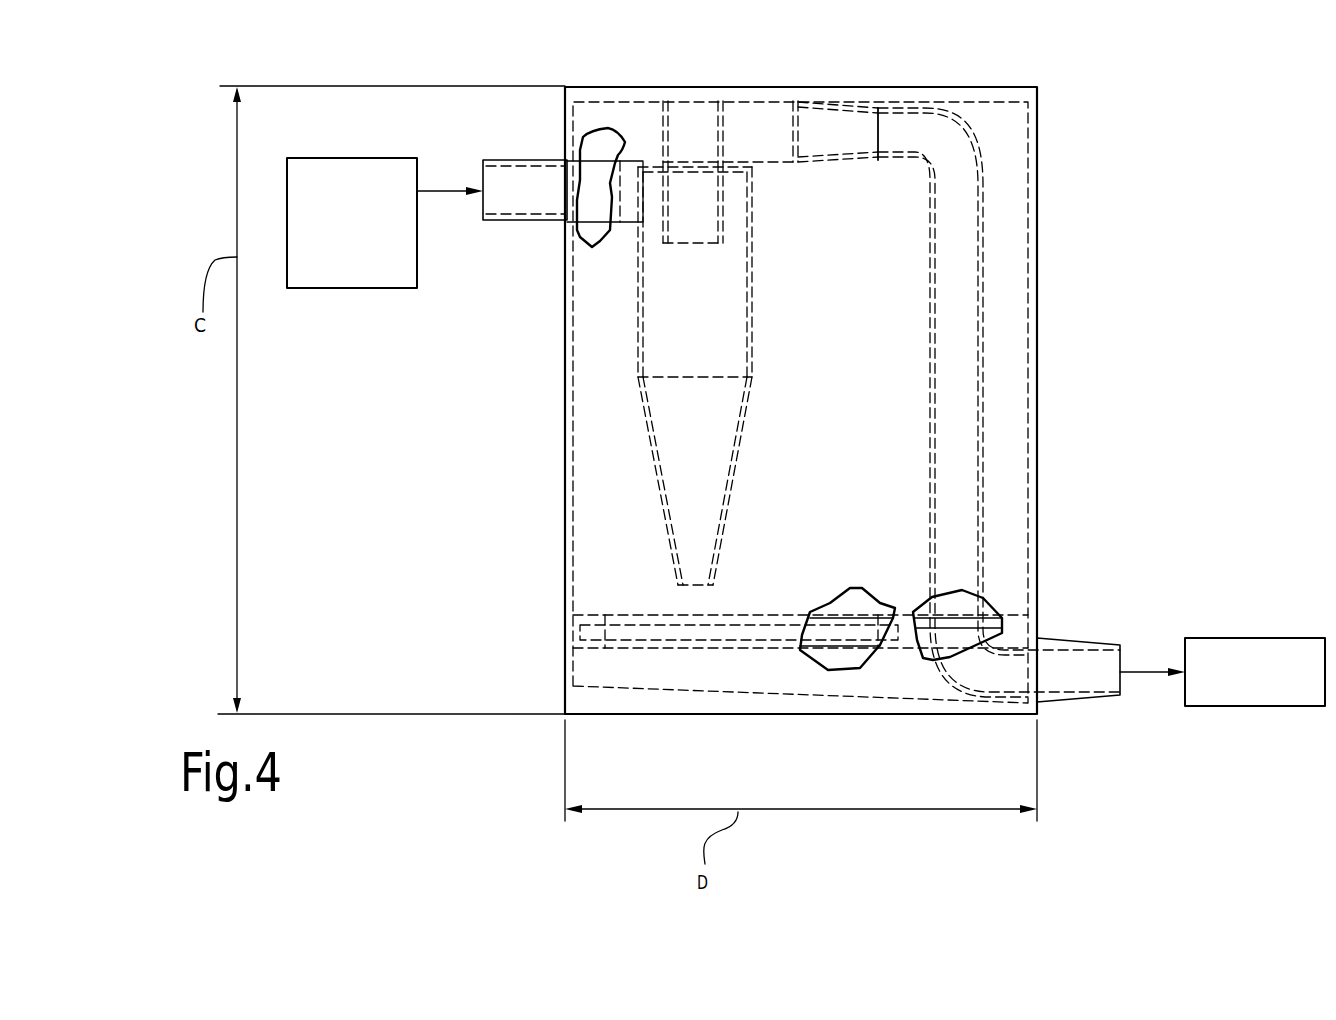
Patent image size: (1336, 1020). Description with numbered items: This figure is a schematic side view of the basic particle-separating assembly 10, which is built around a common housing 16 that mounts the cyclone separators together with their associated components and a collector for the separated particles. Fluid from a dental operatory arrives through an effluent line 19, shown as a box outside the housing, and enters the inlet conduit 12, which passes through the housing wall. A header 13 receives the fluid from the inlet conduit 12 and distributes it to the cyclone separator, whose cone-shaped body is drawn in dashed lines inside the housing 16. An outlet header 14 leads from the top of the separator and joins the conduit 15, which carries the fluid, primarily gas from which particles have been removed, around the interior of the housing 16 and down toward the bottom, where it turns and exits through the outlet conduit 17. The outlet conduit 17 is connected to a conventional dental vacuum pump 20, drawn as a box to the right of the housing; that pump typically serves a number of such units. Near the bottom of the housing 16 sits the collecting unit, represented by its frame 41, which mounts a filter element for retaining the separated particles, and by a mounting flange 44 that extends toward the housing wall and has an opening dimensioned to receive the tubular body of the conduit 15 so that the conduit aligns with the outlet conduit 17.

The assembly 10 is at (1080, 264).
The inlet conduit 12 is at (522, 173).
The header 13 is at (600, 170).
The outlet header 14 is at (753, 110).
The conduit 15 is at (1000, 327).
The common housing 16 is at (565, 463).
The outlet conduit 17 is at (1068, 667).
The effluent line 19 is at (366, 158).
The dental vacuum pump 20 is at (1243, 707).
The frame 41 is at (852, 635).
The mounting flange 44 is at (962, 622).